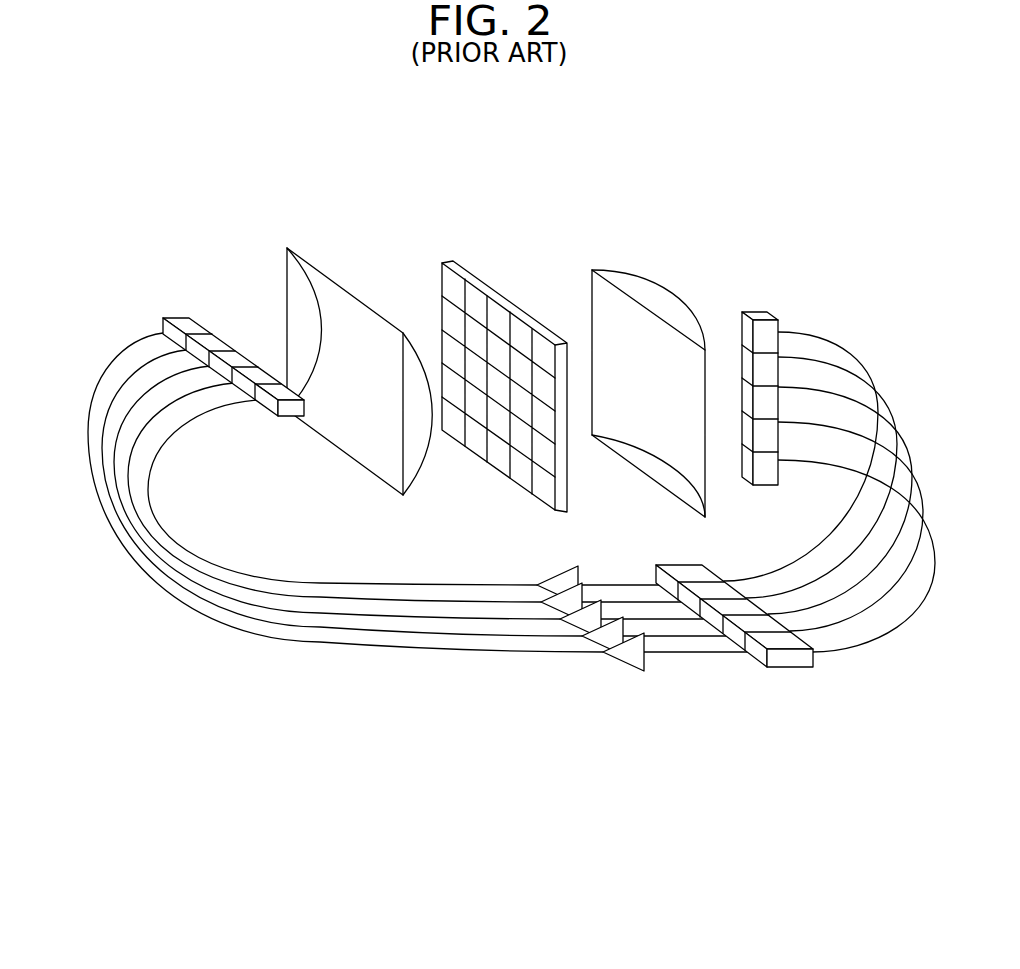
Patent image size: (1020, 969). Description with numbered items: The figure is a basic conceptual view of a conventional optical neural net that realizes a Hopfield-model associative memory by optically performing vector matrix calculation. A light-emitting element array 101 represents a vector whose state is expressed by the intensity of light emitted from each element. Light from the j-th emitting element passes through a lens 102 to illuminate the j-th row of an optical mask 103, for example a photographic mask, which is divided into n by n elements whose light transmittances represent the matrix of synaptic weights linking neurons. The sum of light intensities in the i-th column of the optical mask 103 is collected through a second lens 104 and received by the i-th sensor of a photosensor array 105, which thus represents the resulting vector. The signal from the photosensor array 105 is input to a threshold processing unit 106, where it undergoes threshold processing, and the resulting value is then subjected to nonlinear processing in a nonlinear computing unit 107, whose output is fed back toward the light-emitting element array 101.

The light-emitting element array 101 is at (158, 303).
The lens 102 is at (289, 235).
The optical mask 103 is at (437, 249).
The lens 104 is at (641, 265).
The photosensor array 105 is at (760, 299).
The threshold processing unit 106 is at (778, 679).
The nonlinear computing unit 107 is at (619, 680).